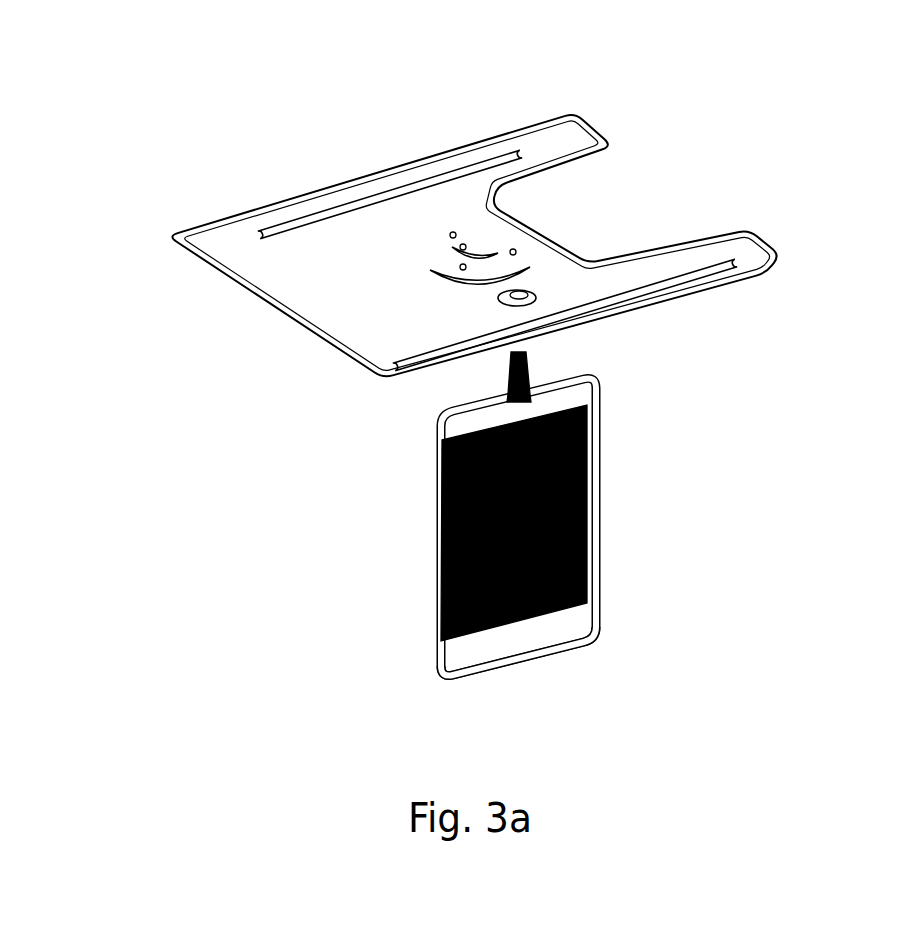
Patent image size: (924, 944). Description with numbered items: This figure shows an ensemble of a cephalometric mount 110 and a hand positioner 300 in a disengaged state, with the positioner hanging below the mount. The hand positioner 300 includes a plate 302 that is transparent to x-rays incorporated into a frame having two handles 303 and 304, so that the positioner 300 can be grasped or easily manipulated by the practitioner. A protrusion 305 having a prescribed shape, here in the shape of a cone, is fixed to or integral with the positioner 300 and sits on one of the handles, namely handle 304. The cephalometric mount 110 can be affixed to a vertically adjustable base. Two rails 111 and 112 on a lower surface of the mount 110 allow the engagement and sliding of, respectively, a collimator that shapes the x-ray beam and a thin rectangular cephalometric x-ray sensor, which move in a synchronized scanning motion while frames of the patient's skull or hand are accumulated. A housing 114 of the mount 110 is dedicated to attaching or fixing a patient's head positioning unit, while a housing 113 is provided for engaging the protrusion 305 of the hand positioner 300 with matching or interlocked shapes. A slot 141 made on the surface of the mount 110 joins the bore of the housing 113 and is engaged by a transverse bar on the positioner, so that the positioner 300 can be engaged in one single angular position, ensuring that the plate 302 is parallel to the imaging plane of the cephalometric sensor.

The cephalometric mount 110 is at (542, 198).
The rail 111 is at (445, 178).
The rail 112 is at (703, 270).
The housing 113 is at (525, 296).
The housing 114 is at (488, 248).
The slot 141 is at (500, 300).
The hand positioner 300 is at (567, 515).
The plate 302 is at (473, 515).
The handle 303 is at (530, 658).
The handle 304 is at (599, 382).
The protrusion 305 is at (530, 367).